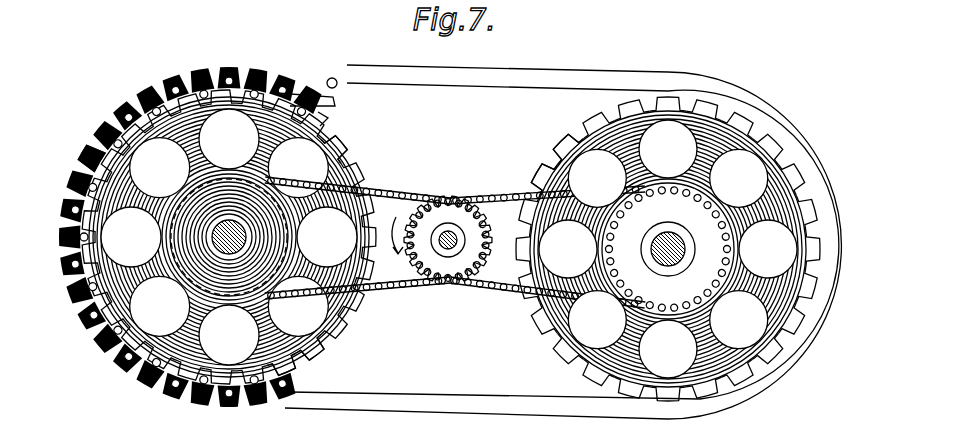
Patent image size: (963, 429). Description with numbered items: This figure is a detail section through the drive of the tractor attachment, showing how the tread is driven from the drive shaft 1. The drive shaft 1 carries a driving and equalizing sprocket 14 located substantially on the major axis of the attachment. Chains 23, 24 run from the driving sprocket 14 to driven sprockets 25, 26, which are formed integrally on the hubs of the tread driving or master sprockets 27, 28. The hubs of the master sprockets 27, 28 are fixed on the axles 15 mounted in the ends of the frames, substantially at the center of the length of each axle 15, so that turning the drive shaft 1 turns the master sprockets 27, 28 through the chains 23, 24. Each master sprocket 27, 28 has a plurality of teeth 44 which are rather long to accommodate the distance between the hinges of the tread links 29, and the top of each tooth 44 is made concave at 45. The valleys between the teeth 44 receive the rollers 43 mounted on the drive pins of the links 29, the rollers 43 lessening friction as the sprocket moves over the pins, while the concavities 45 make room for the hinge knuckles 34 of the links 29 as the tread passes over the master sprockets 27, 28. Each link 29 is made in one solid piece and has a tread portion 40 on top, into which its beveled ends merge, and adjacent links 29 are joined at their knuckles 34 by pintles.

The drive shaft 1 is at (460, 238).
The driving sprocket 14 is at (467, 272).
The axle 15 is at (225, 237).
The chain 23 is at (358, 297).
The chain 24 is at (533, 285).
The driven sprocket 25 is at (178, 251).
The driven sprocket 26 is at (620, 241).
The master sprocket 27 is at (346, 172).
The master sprocket 28 is at (668, 249).
The link 29 is at (157, 75).
The knuckle 34 is at (333, 79).
The tread portion 40 is at (121, 105).
The roller 43 is at (335, 101).
The tooth 44 is at (336, 134).
The concavity 45 is at (328, 121).